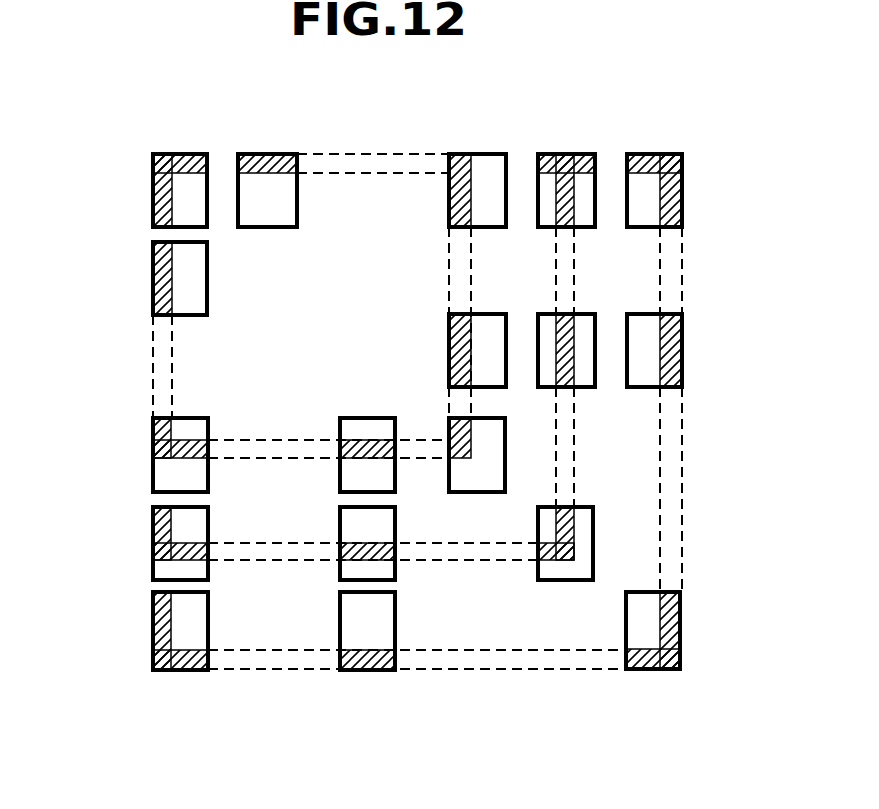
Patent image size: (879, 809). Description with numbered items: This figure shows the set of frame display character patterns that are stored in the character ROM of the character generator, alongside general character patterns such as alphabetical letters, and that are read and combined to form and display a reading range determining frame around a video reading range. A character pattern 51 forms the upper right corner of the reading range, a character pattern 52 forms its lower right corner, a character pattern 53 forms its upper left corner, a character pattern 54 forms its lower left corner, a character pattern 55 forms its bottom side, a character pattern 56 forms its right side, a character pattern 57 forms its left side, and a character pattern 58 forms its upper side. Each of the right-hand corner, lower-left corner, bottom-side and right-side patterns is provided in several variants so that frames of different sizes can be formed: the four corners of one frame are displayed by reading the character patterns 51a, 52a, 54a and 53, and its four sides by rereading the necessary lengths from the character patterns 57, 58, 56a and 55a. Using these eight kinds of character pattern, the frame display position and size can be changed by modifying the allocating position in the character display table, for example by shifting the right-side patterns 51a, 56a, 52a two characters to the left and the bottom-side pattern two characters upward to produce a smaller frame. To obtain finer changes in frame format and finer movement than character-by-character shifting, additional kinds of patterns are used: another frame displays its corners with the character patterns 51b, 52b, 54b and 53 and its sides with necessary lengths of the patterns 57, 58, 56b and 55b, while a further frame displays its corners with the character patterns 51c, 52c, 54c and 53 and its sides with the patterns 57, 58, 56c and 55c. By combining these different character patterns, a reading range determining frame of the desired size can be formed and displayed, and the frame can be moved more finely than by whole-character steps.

The character pattern forming upper right corner 51 is at (565, 141).
The character pattern 51a is at (654, 169).
The character pattern 51b is at (563, 155).
The character pattern 51c is at (461, 155).
The character pattern forming lower right corner 52 is at (630, 539).
The character pattern 52a is at (687, 630).
The character pattern 52b is at (572, 547).
The character pattern 52c is at (470, 443).
The character pattern forming upper left corner 53 is at (160, 186).
The character pattern forming lower left corner 54 is at (117, 544).
The character pattern 54a is at (146, 631).
The character pattern 54b is at (157, 540).
The character pattern 54c is at (157, 448).
The character pattern forming bottom side 55 is at (322, 599).
The character pattern 55a is at (373, 660).
The character pattern 55b is at (340, 560).
The character pattern 55c is at (342, 458).
The character pattern forming right side 56 is at (629, 311).
The character pattern 56a is at (689, 350).
The character pattern 56b is at (571, 327).
The character pattern 56c is at (468, 327).
The character pattern forming left side 57 is at (160, 284).
The character pattern forming upper side 58 is at (265, 155).